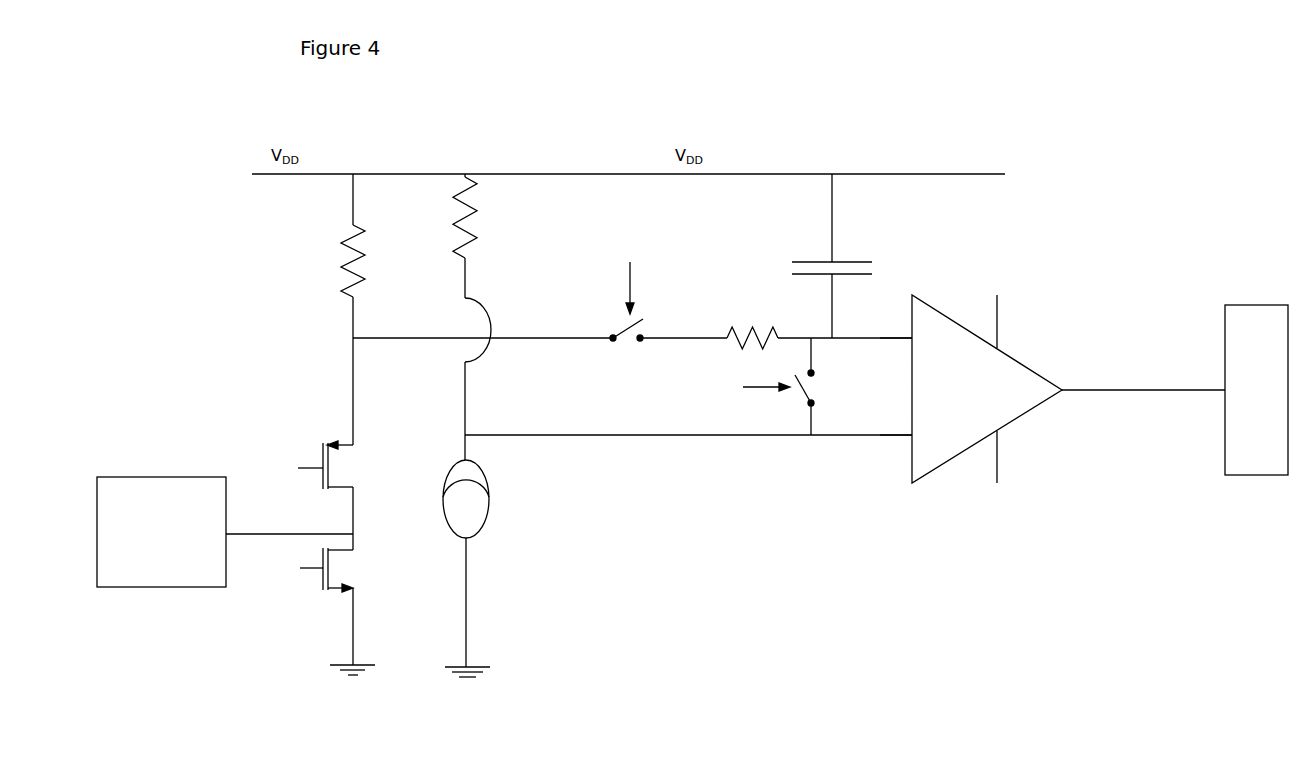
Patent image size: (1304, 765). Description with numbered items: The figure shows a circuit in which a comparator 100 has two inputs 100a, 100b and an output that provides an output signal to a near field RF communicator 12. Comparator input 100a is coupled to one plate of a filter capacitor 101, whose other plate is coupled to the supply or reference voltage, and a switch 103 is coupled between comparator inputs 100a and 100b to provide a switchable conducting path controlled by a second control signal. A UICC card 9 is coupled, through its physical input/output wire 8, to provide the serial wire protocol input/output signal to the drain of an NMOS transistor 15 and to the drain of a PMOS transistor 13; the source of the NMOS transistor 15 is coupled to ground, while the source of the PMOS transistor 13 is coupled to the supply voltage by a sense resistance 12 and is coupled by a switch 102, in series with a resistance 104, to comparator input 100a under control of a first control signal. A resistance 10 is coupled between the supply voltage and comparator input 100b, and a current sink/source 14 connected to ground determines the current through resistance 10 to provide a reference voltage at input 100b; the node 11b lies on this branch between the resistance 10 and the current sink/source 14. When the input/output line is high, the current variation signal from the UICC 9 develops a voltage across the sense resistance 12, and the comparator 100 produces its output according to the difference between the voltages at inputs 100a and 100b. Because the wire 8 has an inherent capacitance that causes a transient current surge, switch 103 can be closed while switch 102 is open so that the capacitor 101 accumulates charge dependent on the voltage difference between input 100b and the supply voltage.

The physical input/output wire 8 is at (289, 538).
The UICC card 9 is at (161, 532).
The resistance 10 is at (449, 236).
The node / wire 11b is at (632, 379).
The sense resistance 12 is at (800, 324).
The PMOS transistor 13 is at (329, 436).
The current sink/source 14 is at (479, 568).
The NMOS transistor 15 is at (337, 604).
The comparator 100 is at (1068, 389).
The comparator input 100a is at (885, 328).
The comparator input 100b is at (885, 423).
The filter capacitor 101 is at (832, 256).
The switch 102 is at (666, 302).
The switch 103 is at (754, 386).
The resistance 104 is at (819, 328).